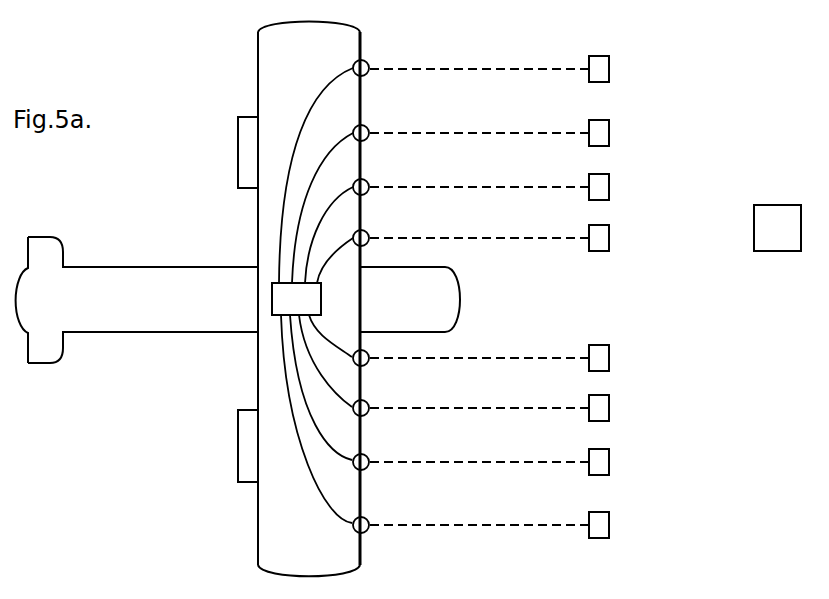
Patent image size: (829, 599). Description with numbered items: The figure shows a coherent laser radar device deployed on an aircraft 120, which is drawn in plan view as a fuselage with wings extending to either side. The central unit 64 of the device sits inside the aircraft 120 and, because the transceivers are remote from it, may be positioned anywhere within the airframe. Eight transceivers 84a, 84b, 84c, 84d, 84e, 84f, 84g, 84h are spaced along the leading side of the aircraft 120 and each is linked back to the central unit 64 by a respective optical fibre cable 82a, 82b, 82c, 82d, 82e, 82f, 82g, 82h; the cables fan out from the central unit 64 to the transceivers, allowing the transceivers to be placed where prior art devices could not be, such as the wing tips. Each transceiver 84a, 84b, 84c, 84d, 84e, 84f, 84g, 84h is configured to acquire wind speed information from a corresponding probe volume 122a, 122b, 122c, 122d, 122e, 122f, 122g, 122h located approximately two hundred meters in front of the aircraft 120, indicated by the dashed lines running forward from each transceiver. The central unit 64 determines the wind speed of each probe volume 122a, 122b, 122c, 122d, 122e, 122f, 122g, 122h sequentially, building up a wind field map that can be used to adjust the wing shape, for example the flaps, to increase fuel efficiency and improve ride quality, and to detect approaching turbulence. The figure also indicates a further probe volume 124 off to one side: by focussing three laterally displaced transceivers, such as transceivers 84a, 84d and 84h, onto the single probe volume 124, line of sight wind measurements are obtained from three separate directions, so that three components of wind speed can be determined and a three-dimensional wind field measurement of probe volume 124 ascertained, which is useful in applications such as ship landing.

The central unit 64 is at (272, 298).
The optical fibre cable 82a is at (336, 78).
The optical fibre cable 82b is at (332, 142).
The optical fibre cable 82c is at (320, 213).
The optical fibre cable 82d is at (317, 262).
The optical fibre cable 82e is at (313, 332).
The optical fibre cable 82f is at (316, 363).
The optical fibre cable 82g is at (317, 440).
The optical fibre cable 82h is at (305, 490).
The transceiver 84a is at (366, 61).
The transceiver 84b is at (366, 126).
The transceiver 84c is at (366, 181).
The transceiver 84d is at (366, 233).
The transceiver 84e is at (366, 364).
The transceiver 84f is at (367, 402).
The transceiver 84g is at (367, 456).
The transceiver 84h is at (367, 519).
The aircraft 120 is at (361, 556).
The probe volume 122a is at (609, 69).
The probe volume 122b is at (609, 133).
The probe volume 122c is at (609, 187).
The probe volume 122d is at (609, 238).
The probe volume 122e is at (609, 358).
The probe volume 122f is at (609, 408).
The probe volume 122g is at (609, 462).
The probe volume 122h is at (609, 525).
The probe volume 124 is at (776, 225).